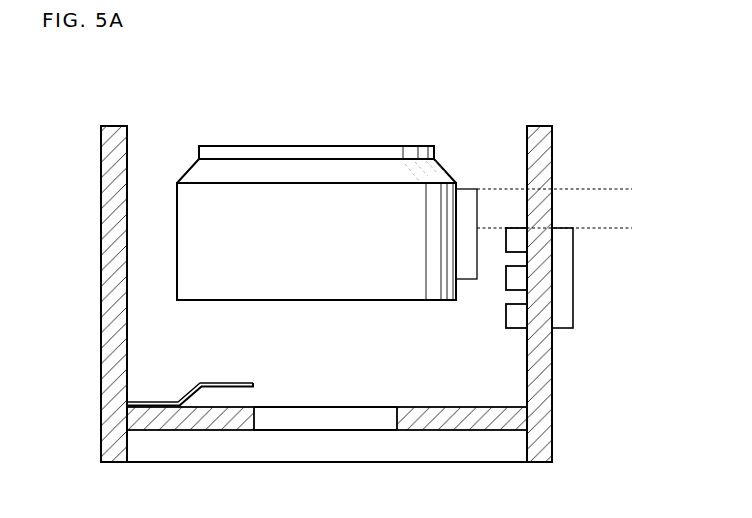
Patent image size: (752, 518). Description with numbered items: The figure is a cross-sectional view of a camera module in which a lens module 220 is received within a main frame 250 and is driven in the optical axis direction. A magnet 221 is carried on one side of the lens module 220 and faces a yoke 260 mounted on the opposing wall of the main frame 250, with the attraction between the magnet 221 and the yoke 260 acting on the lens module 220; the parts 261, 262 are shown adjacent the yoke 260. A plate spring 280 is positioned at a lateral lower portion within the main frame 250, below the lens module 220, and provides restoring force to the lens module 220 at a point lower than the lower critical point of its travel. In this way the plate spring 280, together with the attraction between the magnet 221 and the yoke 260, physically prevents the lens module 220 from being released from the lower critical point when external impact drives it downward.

The lens module 220 is at (188, 246).
The magnet 221 is at (463, 198).
The main frame 250 is at (118, 336).
The yoke 260 is at (563, 236).
The connector contact 261 is at (520, 245).
The connector contact 262 is at (520, 282).
The plate spring 280 is at (222, 386).